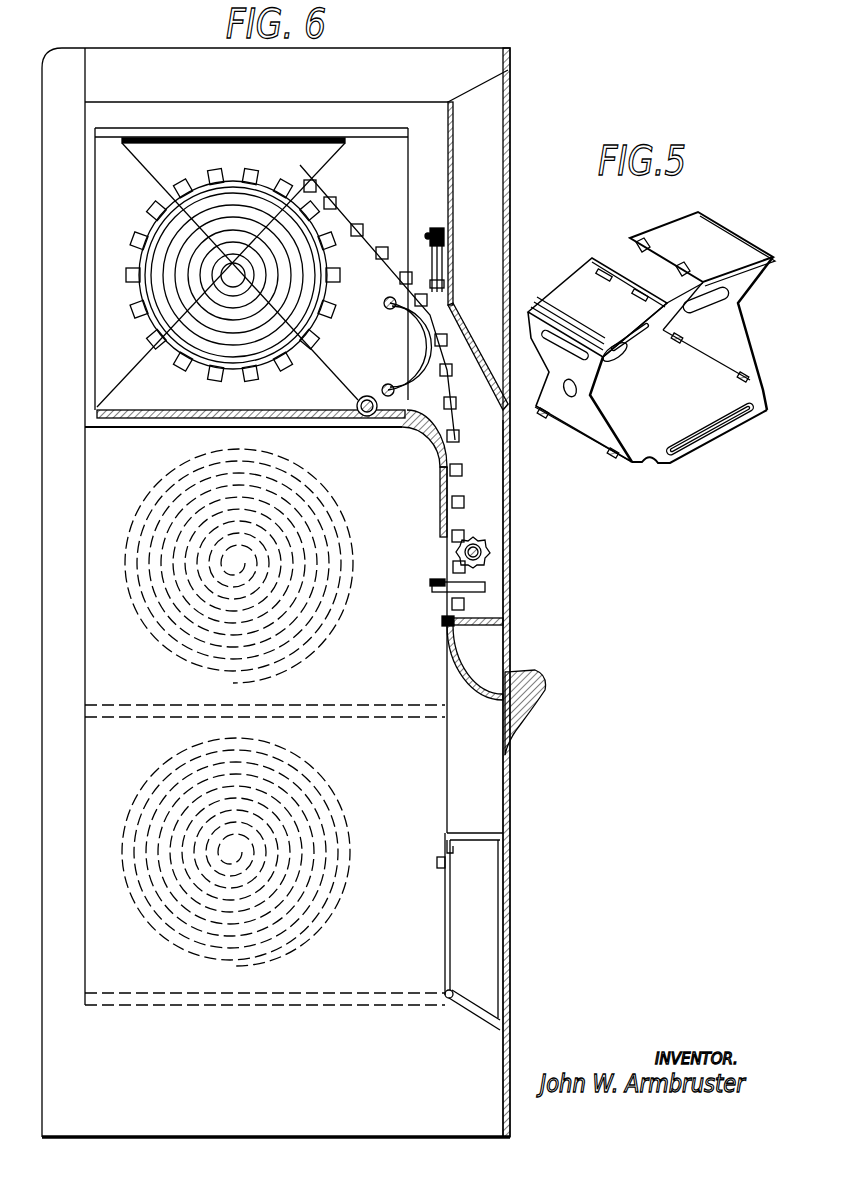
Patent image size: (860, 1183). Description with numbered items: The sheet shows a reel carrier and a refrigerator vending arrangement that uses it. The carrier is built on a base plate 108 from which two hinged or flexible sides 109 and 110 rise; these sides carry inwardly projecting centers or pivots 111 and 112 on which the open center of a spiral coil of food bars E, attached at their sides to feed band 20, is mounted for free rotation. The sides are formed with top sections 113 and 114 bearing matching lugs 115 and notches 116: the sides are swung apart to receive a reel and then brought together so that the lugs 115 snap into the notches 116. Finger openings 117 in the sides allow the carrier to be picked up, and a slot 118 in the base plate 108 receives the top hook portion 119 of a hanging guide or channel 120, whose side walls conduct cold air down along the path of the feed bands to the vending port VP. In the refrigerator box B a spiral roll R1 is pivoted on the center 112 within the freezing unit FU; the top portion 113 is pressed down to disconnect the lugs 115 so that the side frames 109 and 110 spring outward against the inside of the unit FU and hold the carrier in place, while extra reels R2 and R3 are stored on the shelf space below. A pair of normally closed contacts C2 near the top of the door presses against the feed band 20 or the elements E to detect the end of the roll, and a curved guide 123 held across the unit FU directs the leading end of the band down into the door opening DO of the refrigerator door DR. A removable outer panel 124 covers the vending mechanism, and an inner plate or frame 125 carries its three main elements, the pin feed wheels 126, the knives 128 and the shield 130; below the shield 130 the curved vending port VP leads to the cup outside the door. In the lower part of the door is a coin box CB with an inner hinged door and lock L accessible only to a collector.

In FIG. 6, the refrigerator box B is at (42, 470).
In FIG. 6, the door opening DO is at (483, 495).
In FIG. 6, the removable outer panel 124 is at (507, 477).
In FIG. 6, the freezing unit FU is at (335, 128).
In FIG. 6, the side 110 is at (323, 157).
In FIG. 5, the side 110 is at (737, 350).
In FIG. 6, the spiral roll R1 is at (148, 200).
In FIG. 6, the feed band 20 is at (395, 263).
In FIG. 6, the center 112 is at (233, 275).
In FIG. 5, the center 112 is at (710, 300).
In FIG. 6, the food bar E is at (335, 205).
In FIG. 6, the top hook portion 119 is at (357, 401).
In FIG. 6, the normally closed contacts C2 is at (437, 273).
In FIG. 6, the curved guide 123 is at (430, 363).
In FIG. 6, the hanging guide or channel 120 is at (420, 438).
In FIG. 6, the inner plate or frame 125 is at (440, 488).
In FIG. 6, the pin feed wheels 126 is at (487, 552).
In FIG. 6, the knives 128 is at (473, 587).
In FIG. 6, the shield 130 is at (443, 625).
In FIG. 6, the vending port VP is at (483, 655).
In FIG. 6, the refrigerator door DR is at (483, 798).
In FIG. 6, the coin box CB is at (480, 928).
In FIG. 6, the lock L is at (440, 863).
In FIG. 6, the extra reel R2 is at (153, 495).
In FIG. 6, the extra reel R3 is at (162, 780).
In FIG. 5, the top section 114 is at (672, 227).
In FIG. 5, the lugs 115 is at (633, 252).
In FIG. 5, the notches 116 is at (590, 260).
In FIG. 5, the top section 113 is at (560, 293).
In FIG. 5, the finger openings 117 is at (547, 340).
In FIG. 5, the center 111 is at (617, 368).
In FIG. 5, the side 109 is at (583, 417).
In FIG. 5, the base plate 108 is at (660, 423).
In FIG. 5, the slot 118 is at (703, 433).